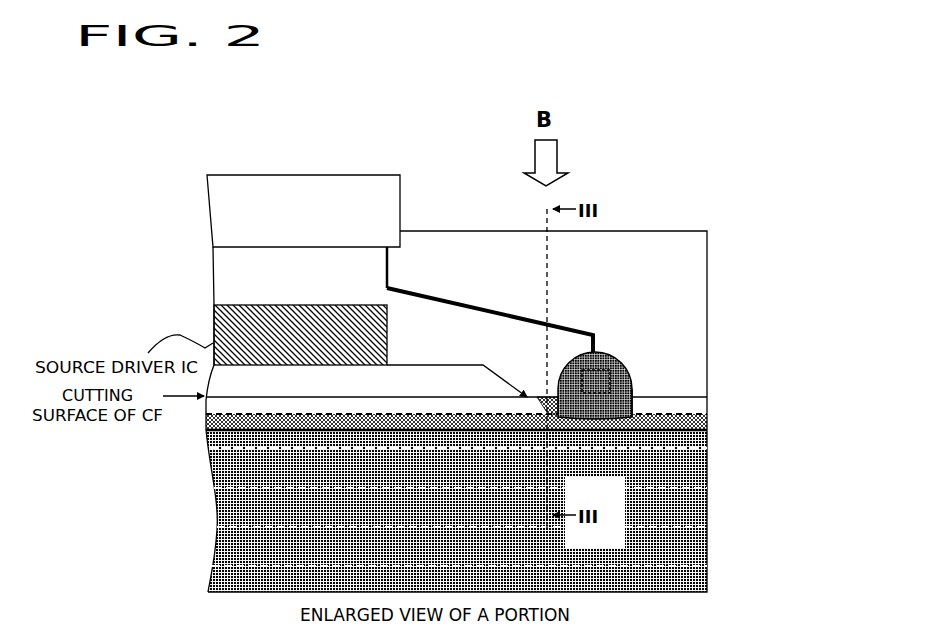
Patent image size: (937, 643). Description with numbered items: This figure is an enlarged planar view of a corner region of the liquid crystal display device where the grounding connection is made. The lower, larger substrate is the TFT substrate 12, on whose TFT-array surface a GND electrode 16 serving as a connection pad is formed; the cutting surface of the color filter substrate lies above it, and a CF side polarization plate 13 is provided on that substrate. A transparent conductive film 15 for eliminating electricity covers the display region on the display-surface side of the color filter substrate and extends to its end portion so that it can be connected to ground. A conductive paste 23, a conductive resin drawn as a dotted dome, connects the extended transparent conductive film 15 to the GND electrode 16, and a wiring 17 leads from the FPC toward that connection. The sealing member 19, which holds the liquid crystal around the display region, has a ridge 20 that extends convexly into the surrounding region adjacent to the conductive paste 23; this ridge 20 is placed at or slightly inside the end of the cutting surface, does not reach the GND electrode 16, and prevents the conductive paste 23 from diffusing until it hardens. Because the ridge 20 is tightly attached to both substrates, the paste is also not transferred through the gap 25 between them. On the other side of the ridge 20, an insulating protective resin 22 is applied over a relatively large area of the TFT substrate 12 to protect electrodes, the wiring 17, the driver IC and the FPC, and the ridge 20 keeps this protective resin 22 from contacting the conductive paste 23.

The TFT substrate 12 is at (212, 272).
The CF side polarization plate 13 is at (690, 510).
The transparent conductive film 15 is at (678, 404).
The GND electrode 16 is at (632, 377).
The wiring 17 is at (420, 288).
The sealing member 19 is at (707, 430).
The ridge 20 is at (553, 395).
The protective resin 22 is at (230, 383).
The conductive paste 23 is at (612, 391).
The gap 25 is at (255, 403).